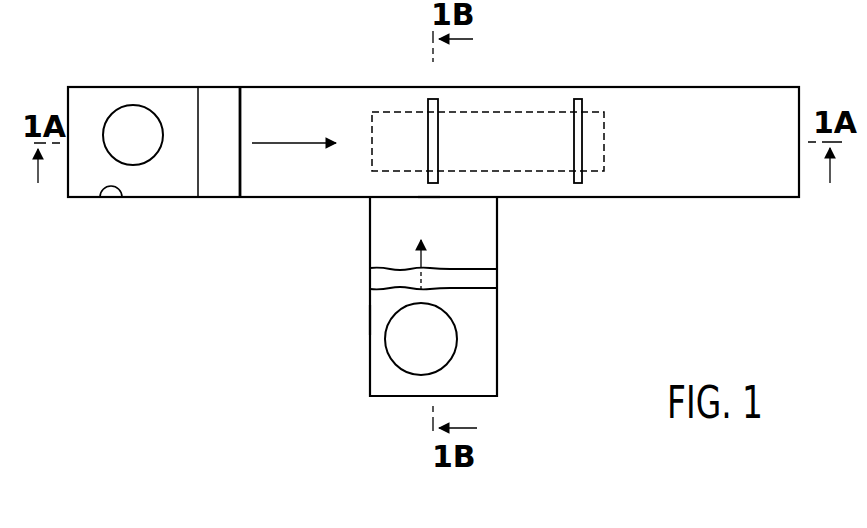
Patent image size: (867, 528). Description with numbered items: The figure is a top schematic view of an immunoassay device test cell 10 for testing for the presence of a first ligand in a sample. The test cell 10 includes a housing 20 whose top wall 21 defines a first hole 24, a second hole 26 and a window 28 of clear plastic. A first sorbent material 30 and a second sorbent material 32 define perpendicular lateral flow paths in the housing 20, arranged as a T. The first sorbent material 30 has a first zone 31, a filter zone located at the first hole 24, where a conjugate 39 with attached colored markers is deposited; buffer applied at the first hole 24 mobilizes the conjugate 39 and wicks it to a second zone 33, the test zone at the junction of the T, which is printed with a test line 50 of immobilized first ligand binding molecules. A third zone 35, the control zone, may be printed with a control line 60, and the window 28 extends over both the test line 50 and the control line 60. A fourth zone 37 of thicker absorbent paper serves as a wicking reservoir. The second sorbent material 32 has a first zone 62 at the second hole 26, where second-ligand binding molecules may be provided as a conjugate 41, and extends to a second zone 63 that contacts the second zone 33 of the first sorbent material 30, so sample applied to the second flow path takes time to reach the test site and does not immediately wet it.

The immunoassay device test cell 10 is at (328, 272).
The housing 20 is at (270, 199).
The top wall 21 is at (118, 191).
The first hole 24 is at (133, 110).
The second hole 26 is at (402, 360).
The window 28 is at (588, 172).
The first sorbent material 30 is at (310, 185).
The first zone 31 is at (190, 117).
The second sorbent material 32 is at (485, 340).
The second zone 33 is at (416, 137).
The third zone 35 is at (562, 137).
The fourth zone 37 is at (754, 137).
The conjugate 39 is at (207, 192).
The conjugate 41 is at (500, 282).
The test line 50 is at (438, 140).
The control line 60 is at (582, 118).
The first zone 62 is at (363, 319).
The second zone 63 is at (422, 180).